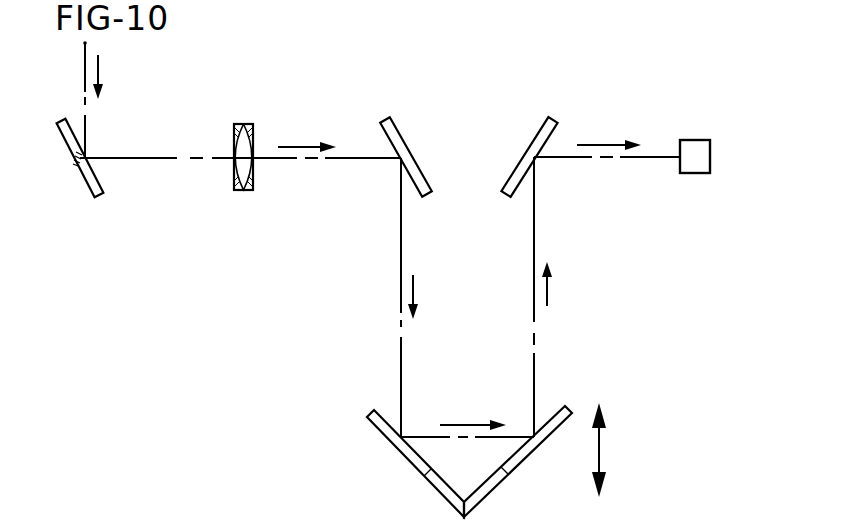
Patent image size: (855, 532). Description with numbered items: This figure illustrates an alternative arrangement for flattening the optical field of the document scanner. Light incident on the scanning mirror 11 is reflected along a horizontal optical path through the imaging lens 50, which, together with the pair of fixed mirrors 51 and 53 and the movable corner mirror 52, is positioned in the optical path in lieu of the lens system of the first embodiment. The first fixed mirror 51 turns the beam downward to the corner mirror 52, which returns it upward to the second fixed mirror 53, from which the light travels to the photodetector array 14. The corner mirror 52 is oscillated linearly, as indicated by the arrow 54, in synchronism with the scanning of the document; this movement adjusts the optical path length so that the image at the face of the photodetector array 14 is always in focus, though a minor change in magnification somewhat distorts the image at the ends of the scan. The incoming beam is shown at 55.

The scanning mirror 11 is at (103, 187).
The photodetector array 14 is at (705, 153).
The imaging lens 50 is at (243, 146).
The fixed mirror 51 is at (390, 138).
The movable corner mirror 52 is at (387, 415).
The fixed mirror 53 is at (545, 145).
The arrow 54 is at (603, 445).
The incident light beam 55 is at (87, 127).